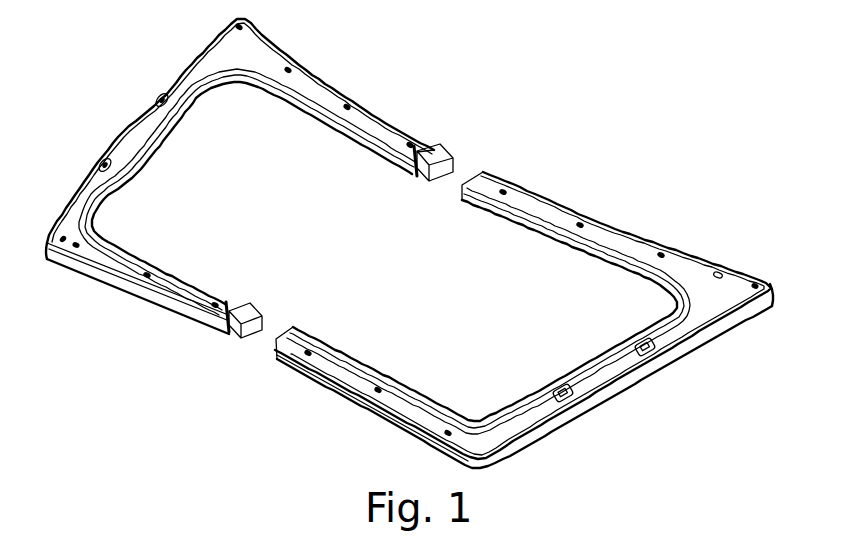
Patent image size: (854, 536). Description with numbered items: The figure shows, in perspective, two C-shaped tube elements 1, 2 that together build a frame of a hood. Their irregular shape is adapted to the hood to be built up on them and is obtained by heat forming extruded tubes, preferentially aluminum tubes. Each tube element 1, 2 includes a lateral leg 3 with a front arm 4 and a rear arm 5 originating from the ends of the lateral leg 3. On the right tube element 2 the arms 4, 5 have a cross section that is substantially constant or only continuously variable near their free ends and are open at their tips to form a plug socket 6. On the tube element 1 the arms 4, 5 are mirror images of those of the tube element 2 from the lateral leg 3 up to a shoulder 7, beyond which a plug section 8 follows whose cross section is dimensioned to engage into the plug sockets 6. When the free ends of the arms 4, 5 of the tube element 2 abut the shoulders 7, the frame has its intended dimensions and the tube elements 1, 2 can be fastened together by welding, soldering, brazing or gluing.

The tube element 1 is at (374, 66).
The tube element 2 is at (594, 182).
The lateral leg 3 is at (125, 128).
The front arm 4 is at (120, 275).
The rear arm 5 is at (337, 132).
The plug socket 6 is at (454, 192).
The shoulder 7 is at (423, 155).
The plug section 8 is at (443, 153).